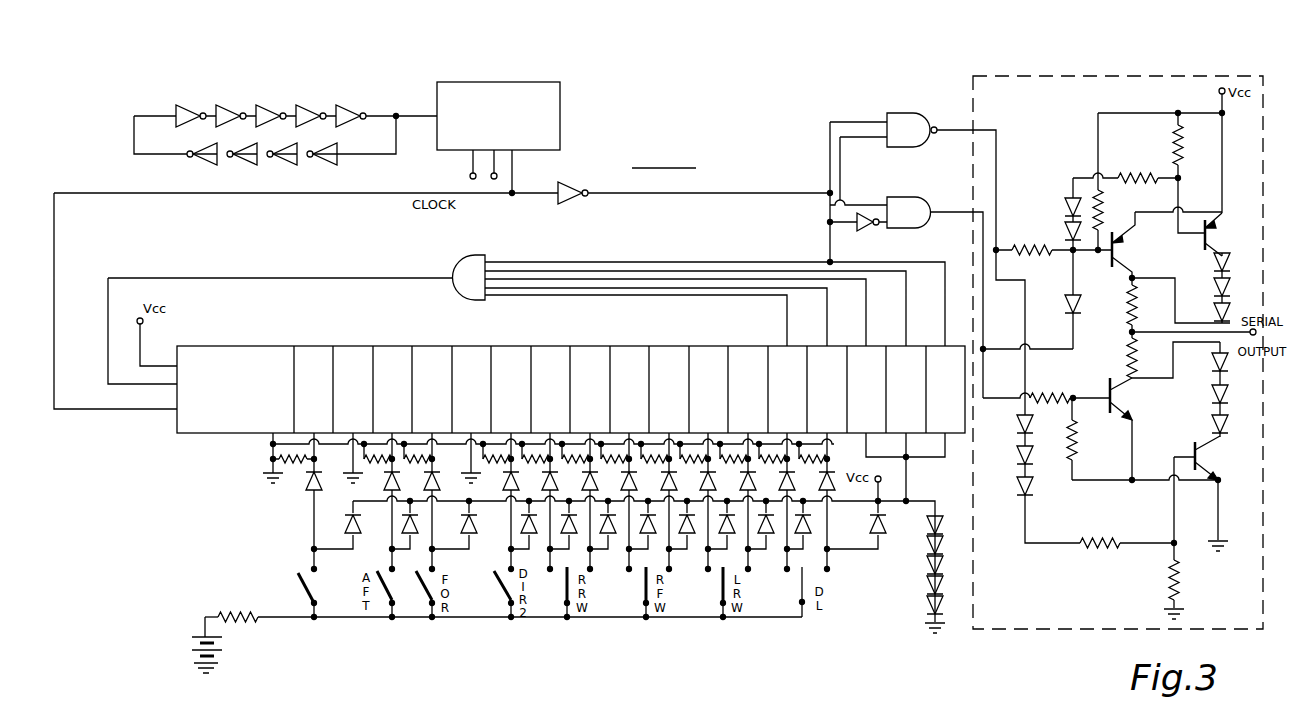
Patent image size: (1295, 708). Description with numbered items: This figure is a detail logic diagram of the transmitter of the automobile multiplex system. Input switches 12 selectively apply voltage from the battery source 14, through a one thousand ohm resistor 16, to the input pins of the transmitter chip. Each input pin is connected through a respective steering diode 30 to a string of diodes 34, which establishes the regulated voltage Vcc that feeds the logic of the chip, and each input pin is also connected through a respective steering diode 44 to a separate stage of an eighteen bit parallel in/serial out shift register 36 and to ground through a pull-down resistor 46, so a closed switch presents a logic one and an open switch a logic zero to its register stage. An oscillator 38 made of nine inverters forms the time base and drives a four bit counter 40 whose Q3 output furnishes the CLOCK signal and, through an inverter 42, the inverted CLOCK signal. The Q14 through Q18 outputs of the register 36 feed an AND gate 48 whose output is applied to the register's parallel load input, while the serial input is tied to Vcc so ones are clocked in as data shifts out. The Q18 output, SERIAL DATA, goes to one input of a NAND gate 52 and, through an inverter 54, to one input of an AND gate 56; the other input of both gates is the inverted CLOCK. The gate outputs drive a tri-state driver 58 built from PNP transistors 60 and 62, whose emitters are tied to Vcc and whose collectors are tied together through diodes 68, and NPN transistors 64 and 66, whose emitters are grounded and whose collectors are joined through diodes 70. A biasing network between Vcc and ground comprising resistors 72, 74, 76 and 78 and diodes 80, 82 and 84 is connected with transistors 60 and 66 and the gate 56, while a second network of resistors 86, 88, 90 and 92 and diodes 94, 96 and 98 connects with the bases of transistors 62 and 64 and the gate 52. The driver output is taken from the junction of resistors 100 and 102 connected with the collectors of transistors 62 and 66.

The input switches 12 is at (294, 577).
The source of direct current potential 14 is at (218, 644).
The resistor 16 is at (233, 612).
The steering diodes 30 is at (350, 521).
The string of diodes 34 is at (930, 566).
The shift register 36 is at (250, 345).
The oscillator 38 is at (262, 110).
The 4 bit counter 40 is at (560, 129).
The inverter 42 is at (570, 200).
The steering diodes 44 is at (307, 486).
The pull-down resistors 46 is at (286, 462).
The AND gate 48 is at (456, 268).
The NAND gate 52 is at (902, 120).
The inverter 54 is at (866, 231).
The AND gate 56 is at (915, 202).
The tri-state driver 58 is at (1063, 631).
The PNP transistor 60 is at (1218, 237).
The PNP transistor 62 is at (1128, 252).
The NPN transistor 64 is at (1204, 458).
The NPN transistor 66 is at (1122, 403).
The diodes 68 is at (1212, 291).
The diodes 70 is at (1212, 375).
The resistor 72 is at (1182, 153).
The resistor 74 is at (1142, 174).
The resistor 76 is at (1046, 393).
The resistor 78 is at (1080, 442).
The diode 80 is at (1065, 203).
The diode 82 is at (1065, 227).
The diode 84 is at (1065, 302).
The resistor 86 is at (1104, 230).
The resistor 88 is at (1035, 246).
The resistor 90 is at (1100, 549).
The resistor 92 is at (1182, 583).
The diode 94 is at (1015, 423).
The diode 96 is at (1015, 457).
The diode 98 is at (1015, 490).
The resistor 100 is at (1126, 306).
The resistor 102 is at (1127, 357).